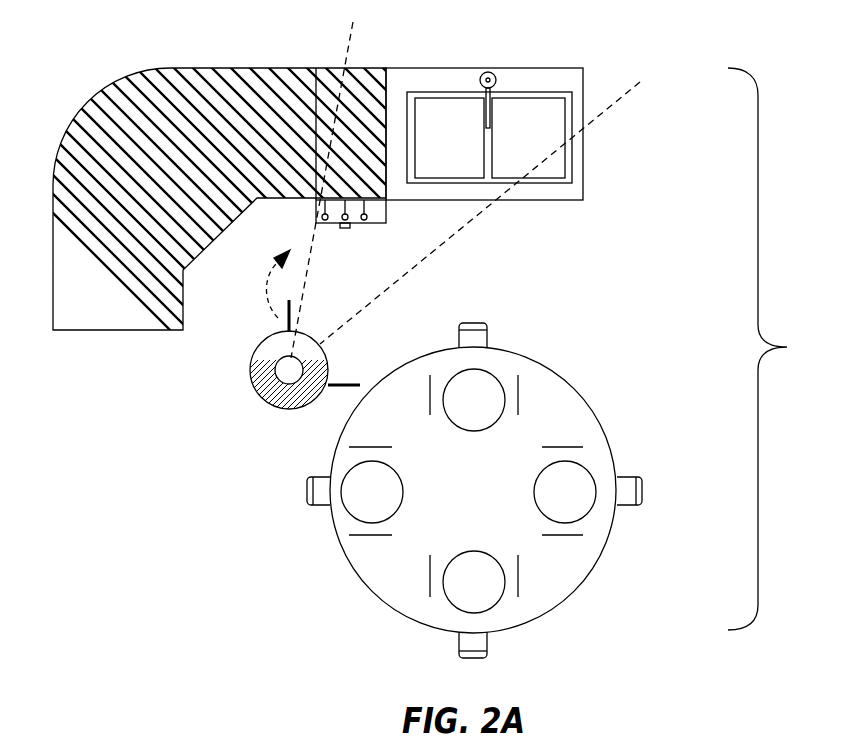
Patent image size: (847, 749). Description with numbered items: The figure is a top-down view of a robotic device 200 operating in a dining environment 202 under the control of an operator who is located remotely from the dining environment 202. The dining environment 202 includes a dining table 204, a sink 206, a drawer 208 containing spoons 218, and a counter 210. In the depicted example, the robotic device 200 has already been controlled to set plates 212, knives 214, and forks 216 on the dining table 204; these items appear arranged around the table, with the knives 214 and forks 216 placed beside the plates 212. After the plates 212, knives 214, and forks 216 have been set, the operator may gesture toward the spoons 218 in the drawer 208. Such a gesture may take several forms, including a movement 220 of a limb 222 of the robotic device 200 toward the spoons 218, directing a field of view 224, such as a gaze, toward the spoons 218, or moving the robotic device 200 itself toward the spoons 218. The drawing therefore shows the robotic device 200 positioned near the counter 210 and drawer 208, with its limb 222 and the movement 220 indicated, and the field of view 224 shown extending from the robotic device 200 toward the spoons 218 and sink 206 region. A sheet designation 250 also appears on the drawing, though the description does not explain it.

The robotic device 200 is at (252, 378).
The dining environment 202 is at (776, 349).
The dining table 204 is at (569, 384).
The sink 206 is at (458, 67).
The drawer 208 is at (387, 205).
The counter 210 is at (195, 186).
The plates 212 is at (464, 550).
The knives 214 is at (566, 446).
The forks 216 is at (367, 446).
The spoons 218 is at (327, 225).
The movement 220 is at (262, 284).
The limb 222 is at (283, 328).
The field of view 224 is at (625, 95).
The sheet designation 250 is at (810, 735).